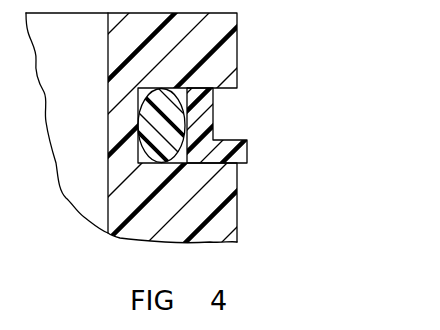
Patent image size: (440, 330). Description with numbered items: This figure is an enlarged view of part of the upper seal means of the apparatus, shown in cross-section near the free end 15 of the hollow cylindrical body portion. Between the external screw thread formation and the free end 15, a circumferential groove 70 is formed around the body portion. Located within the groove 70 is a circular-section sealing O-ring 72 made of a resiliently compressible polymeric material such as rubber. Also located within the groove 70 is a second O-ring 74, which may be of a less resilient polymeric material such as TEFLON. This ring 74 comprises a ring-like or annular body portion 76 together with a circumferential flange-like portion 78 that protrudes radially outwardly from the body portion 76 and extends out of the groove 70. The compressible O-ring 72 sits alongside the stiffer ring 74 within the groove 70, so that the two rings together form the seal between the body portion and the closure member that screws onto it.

The free end 15 is at (207, 205).
The circumferential groove 70 is at (148, 93).
The sealing O-ring 72 is at (162, 126).
The O-ring 74 is at (245, 120).
The annular body portion 76 is at (203, 108).
The flange-like portion 78 is at (240, 152).